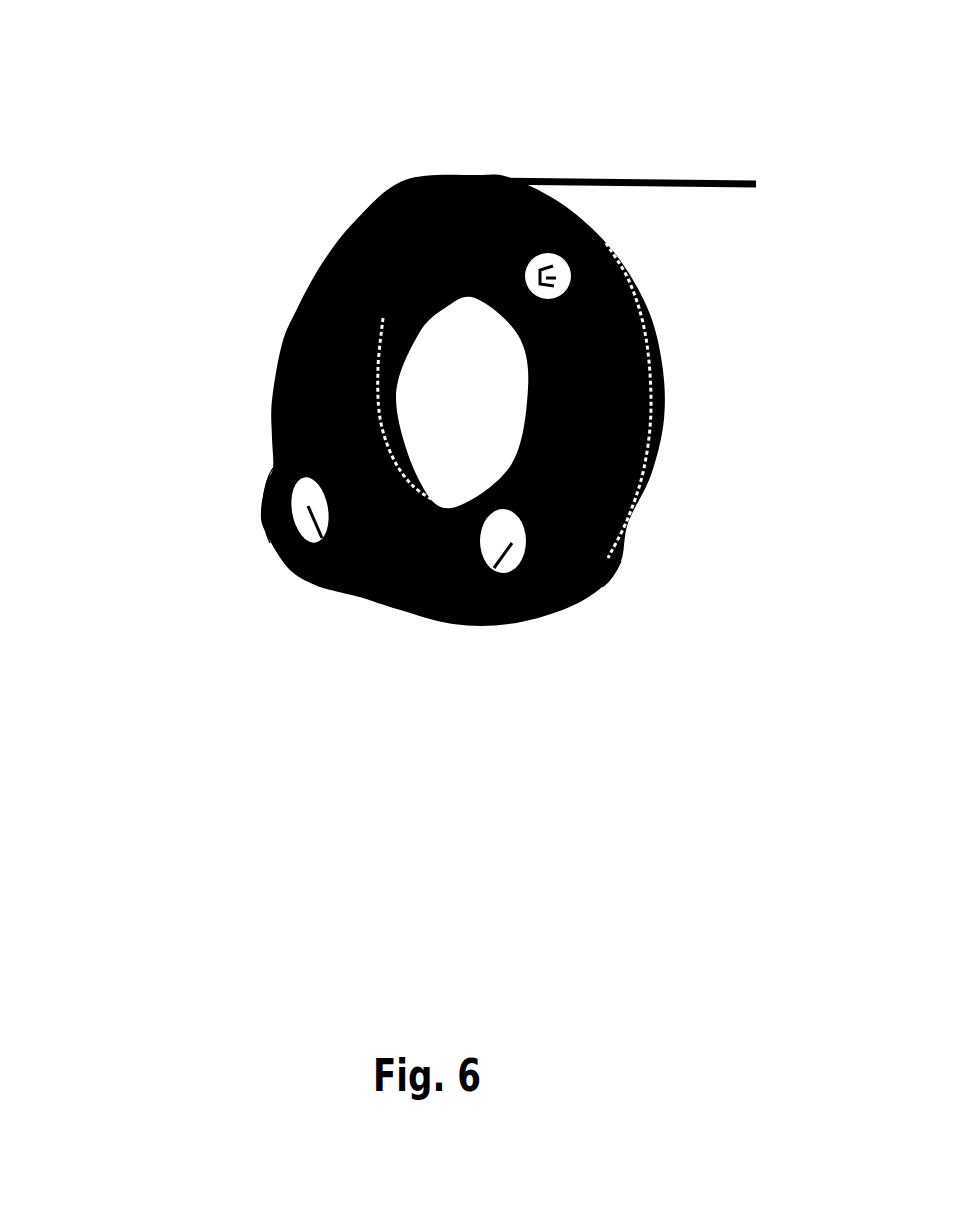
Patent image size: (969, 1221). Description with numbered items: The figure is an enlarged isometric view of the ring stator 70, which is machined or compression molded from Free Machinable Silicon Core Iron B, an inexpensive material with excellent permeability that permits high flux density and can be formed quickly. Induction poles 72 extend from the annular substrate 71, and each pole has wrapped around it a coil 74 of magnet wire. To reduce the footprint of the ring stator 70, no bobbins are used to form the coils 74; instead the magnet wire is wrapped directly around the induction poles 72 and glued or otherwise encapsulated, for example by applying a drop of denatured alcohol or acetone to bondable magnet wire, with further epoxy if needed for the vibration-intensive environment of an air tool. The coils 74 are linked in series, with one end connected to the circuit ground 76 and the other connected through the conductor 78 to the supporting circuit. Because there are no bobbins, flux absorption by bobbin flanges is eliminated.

The ring stator 70 is at (466, 427).
The annular substrate 71 is at (648, 398).
The induction poles 72 is at (327, 577).
The coils 74 is at (248, 513).
The circuit ground 76 is at (561, 263).
The conductor 78 is at (683, 165).